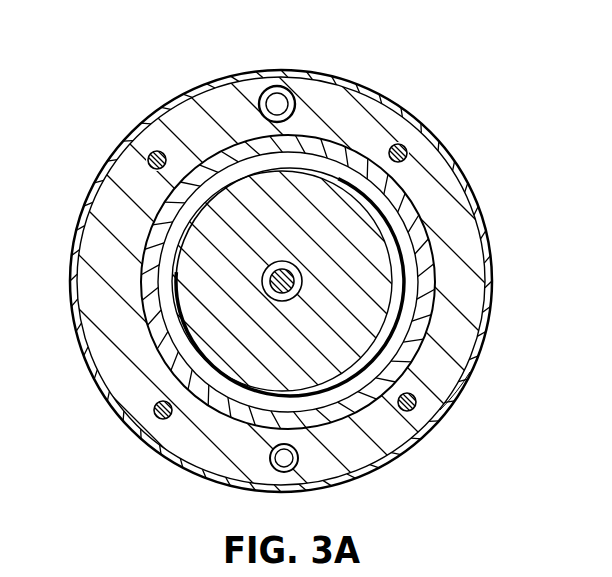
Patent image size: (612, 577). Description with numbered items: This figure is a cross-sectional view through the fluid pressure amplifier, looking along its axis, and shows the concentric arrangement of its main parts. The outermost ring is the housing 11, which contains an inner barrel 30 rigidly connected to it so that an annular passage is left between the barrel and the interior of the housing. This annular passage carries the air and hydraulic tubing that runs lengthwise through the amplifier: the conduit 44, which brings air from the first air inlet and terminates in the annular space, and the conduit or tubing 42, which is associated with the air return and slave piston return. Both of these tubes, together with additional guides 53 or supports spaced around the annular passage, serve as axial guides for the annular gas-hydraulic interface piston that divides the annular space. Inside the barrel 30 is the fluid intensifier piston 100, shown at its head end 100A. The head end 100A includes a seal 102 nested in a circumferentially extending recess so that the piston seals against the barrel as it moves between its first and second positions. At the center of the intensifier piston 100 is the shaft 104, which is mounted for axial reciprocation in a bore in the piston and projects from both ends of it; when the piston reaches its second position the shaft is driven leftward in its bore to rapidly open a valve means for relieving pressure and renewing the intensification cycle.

The housing 11 is at (443, 147).
The inner barrel 30 is at (347, 328).
The conduit or tubing 42 is at (294, 88).
The conduit 44 is at (297, 468).
The guides 53 is at (149, 155).
The fluid intensifier piston 100 is at (398, 261).
The head end 100A is at (472, 372).
The seal 102 is at (387, 224).
The shaft 104 is at (297, 283).